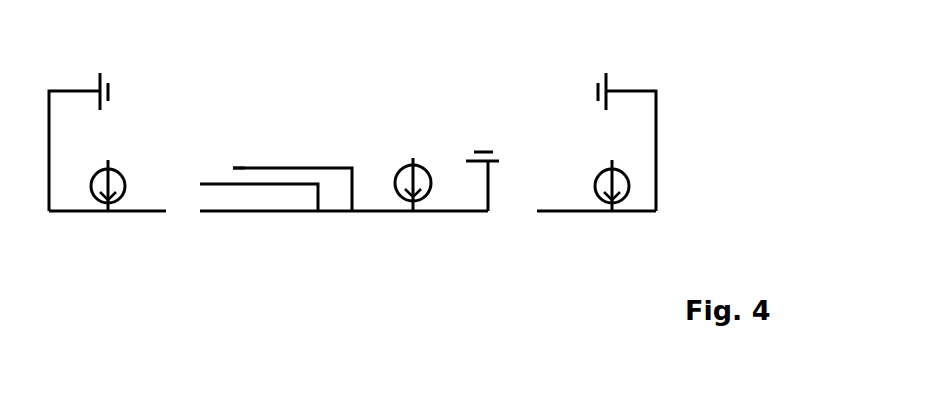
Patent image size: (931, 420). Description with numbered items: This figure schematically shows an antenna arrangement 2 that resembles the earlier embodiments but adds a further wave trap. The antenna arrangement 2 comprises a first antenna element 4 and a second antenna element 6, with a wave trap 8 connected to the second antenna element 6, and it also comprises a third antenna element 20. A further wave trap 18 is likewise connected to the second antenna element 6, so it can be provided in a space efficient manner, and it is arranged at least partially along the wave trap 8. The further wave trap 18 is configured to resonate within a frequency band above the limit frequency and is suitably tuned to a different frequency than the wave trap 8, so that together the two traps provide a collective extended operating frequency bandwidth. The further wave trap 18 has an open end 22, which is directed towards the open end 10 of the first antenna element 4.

The antenna arrangement 2 is at (718, 118).
The first antenna element 4 is at (97, 211).
The second antenna element 6 is at (343, 211).
The wave trap 8 is at (225, 184).
The open end 10 is at (159, 232).
The further wave trap 18 is at (296, 168).
The third antenna element 20 is at (567, 211).
The open end 22 is at (244, 148).